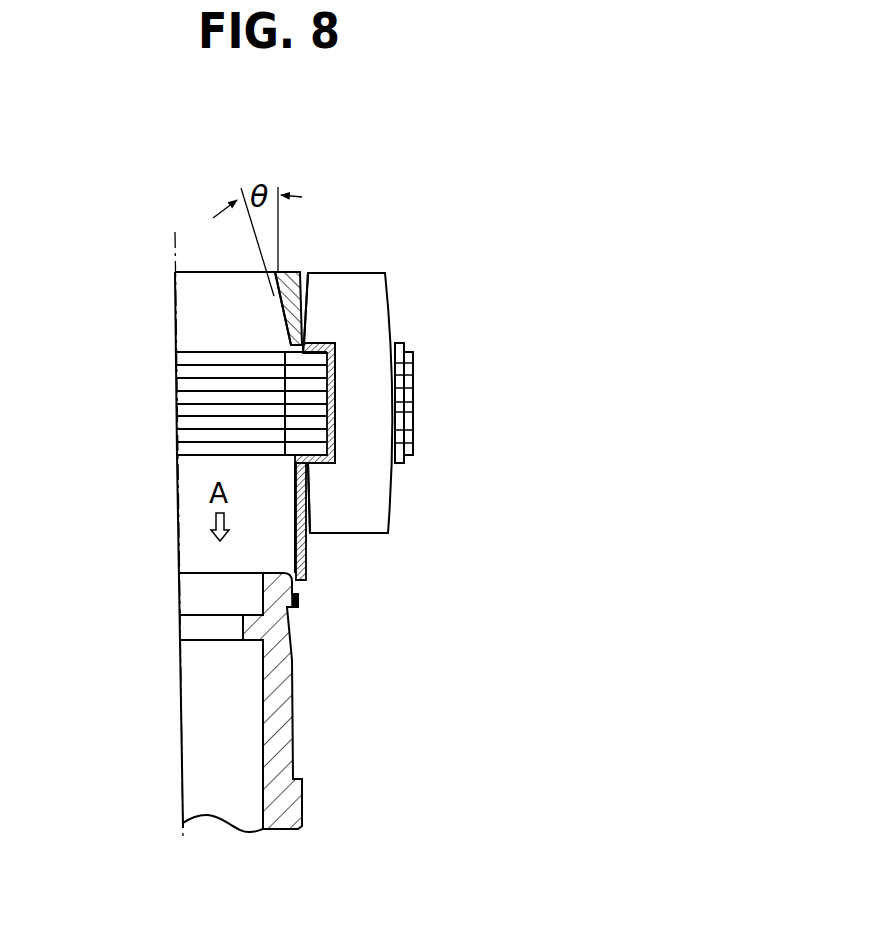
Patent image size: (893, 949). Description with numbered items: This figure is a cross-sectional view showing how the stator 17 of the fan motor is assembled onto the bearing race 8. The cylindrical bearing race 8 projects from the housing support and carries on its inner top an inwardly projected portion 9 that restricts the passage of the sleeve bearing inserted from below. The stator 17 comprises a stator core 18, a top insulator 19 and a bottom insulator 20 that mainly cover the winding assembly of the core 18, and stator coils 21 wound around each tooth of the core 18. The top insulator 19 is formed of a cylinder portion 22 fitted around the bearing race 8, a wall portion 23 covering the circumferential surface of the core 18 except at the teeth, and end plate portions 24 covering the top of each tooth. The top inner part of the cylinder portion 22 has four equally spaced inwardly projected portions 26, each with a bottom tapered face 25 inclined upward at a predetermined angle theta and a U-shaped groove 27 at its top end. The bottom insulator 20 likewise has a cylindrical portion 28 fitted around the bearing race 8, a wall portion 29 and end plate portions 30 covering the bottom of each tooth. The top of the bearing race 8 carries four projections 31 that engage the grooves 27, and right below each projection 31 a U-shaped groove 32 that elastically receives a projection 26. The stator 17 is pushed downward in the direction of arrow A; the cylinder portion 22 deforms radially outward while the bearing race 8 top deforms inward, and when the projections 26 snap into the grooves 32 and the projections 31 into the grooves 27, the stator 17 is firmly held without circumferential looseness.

The bearing race 8 is at (294, 714).
The inwardly projected portion 9 is at (258, 640).
The stator 17 is at (418, 351).
The stator core 18 is at (185, 406).
The top insulator 19 is at (334, 330).
The bottom insulator 20 is at (343, 450).
The stator coils 21 is at (380, 272).
The cylinder portion 22 is at (315, 310).
The wall portion 23 is at (337, 383).
The end plate portions 24 is at (312, 342).
The bottom tapered face 25 is at (274, 320).
The inwardly projected portions 26 is at (273, 290).
The U-shaped groove 27 is at (285, 272).
The cylindrical portion 28 is at (308, 557).
The wall portion 29 is at (338, 427).
The end plate portions 30 is at (320, 463).
The projections 31 is at (300, 598).
The U-shaped groove 32 is at (300, 606).